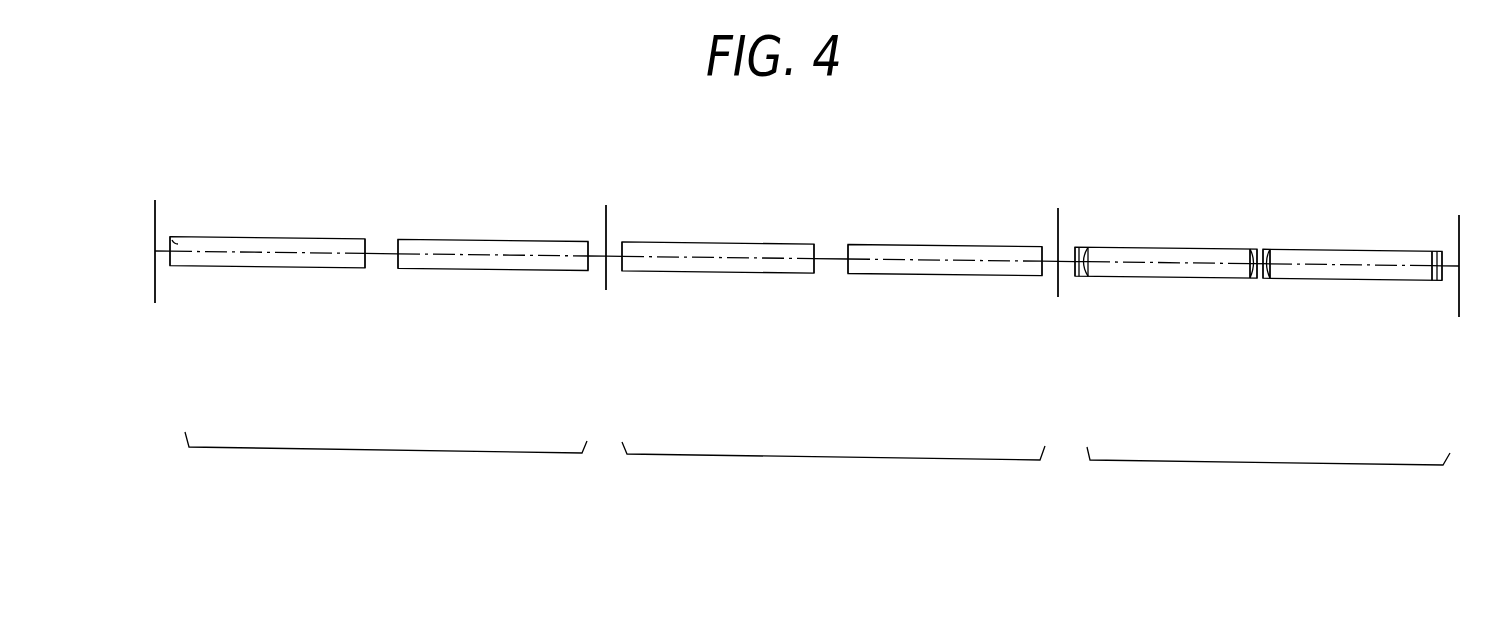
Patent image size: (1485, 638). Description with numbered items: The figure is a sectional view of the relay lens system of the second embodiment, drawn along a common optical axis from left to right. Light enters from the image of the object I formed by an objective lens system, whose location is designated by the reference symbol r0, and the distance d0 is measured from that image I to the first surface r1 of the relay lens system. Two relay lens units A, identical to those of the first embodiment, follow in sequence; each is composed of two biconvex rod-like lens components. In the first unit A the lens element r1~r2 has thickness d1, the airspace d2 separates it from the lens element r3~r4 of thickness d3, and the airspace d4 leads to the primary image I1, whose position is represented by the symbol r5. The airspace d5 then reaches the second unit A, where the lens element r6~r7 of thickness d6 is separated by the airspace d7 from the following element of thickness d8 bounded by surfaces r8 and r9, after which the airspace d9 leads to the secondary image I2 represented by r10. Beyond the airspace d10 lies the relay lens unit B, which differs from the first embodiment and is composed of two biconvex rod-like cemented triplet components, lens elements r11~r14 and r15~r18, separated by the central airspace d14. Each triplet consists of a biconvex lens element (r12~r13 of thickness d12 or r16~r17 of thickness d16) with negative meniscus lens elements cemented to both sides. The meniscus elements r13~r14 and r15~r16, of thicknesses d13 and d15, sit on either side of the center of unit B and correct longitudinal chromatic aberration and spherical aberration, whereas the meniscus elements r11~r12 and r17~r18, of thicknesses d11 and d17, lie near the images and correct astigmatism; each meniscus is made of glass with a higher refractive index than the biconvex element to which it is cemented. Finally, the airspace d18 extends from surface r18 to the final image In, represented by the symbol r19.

The image of object formed by objective lens system r0 is at (152, 208).
The first surface of relay lens system r1 is at (172, 238).
The lens surface r2 is at (371, 243).
The lens surface r3 is at (397, 244).
The lens surface r4 is at (586, 242).
The primary image r5 is at (604, 227).
The lens surface r6 is at (622, 241).
The lens surface r7 is at (816, 244).
The lens surface r8 is at (847, 245).
The lens surface r9 is at (1038, 246).
The secondary image r10 is at (1056, 228).
The lens surface r11 is at (1076, 248).
The lens surface r12 is at (1092, 248).
The lens surface r13 is at (1252, 259).
The lens surface r14 is at (1255, 256).
The lens surface r15 is at (1261, 258).
The lens surface r16 is at (1269, 258).
The lens surface r17 is at (1430, 256).
The lens surface r18 is at (1439, 256).
The final image r19 is at (1458, 220).
The distance from image of object to first surface d0 is at (163, 254).
The lens element thickness d1 is at (267, 256).
The airspace d2 is at (380, 256).
The lens element thickness d3 is at (480, 260).
The airspace d4 is at (594, 260).
The airspace d5 is at (609, 260).
The lens element thickness d6 is at (708, 260).
The airspace d7 is at (828, 262).
The lens element thickness d8 is at (925, 262).
The airspace d9 is at (1053, 262).
The airspace d10 is at (1068, 262).
The lens element thickness d11 is at (1077, 272).
The lens element thickness d12 is at (1167, 264).
The lens element thickness d13 is at (1252, 273).
The airspace d14 is at (1262, 264).
The lens element thickness d15 is at (1273, 273).
The lens element thickness d16 is at (1330, 266).
The lens element thickness d17 is at (1445, 272).
The airspace d18 is at (1452, 268).
The image of object I is at (155, 300).
The primary image I1 is at (606, 290).
The secondary image I2 is at (1058, 297).
The final image In is at (1459, 302).
The relay lens unit A is at (615, 463).
The relay lens unit B is at (1268, 473).